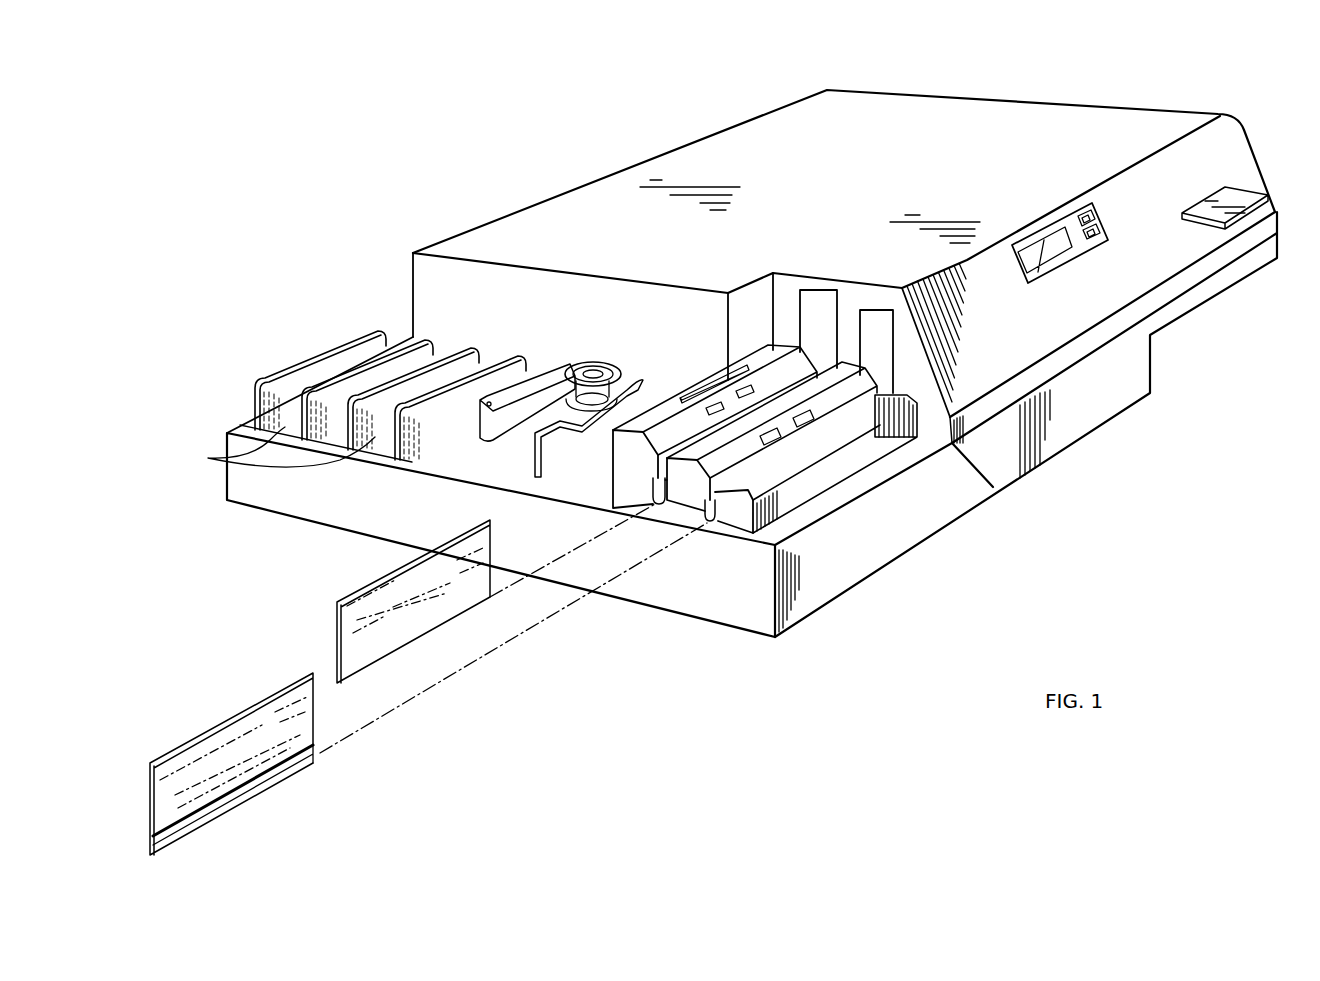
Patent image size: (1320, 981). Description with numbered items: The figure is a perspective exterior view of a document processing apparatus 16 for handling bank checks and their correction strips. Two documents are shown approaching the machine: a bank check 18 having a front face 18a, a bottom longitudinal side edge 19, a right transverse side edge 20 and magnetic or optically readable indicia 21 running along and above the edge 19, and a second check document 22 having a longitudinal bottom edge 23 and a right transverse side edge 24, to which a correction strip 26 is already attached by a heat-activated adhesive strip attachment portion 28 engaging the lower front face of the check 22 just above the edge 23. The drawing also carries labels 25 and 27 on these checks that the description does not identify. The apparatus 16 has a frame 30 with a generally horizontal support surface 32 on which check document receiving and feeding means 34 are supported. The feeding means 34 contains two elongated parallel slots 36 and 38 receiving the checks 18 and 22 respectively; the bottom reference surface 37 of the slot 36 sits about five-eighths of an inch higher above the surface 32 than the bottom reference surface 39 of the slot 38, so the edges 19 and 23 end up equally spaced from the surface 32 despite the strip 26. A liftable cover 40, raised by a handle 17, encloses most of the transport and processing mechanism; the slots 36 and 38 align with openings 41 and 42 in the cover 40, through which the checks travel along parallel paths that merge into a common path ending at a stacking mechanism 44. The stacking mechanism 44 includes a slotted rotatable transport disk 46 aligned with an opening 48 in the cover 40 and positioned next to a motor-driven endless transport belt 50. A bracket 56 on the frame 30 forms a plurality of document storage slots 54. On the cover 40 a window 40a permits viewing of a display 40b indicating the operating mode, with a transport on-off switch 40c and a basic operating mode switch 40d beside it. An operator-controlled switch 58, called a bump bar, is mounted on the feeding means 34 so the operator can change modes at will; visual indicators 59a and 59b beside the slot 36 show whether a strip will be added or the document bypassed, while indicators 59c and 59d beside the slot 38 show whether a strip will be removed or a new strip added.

The apparatus 16 is at (1134, 88).
The handle 17 is at (1248, 188).
The bank check 18 is at (380, 577).
The front face 18a is at (350, 620).
The bottom longitudinal side edge 19 is at (410, 638).
The right transverse side edge 20 is at (493, 543).
The magnetic or optically readable indicia 21 is at (392, 658).
The check document 22 is at (243, 712).
The longitudinal bottom edge 23 is at (148, 847).
The right transverse side edge 24 is at (318, 720).
The top edge of check 25 is at (462, 533).
The correction strip 26 is at (167, 848).
The top edge of second check 27 is at (288, 683).
The adhesive strip attachment portion 28 is at (258, 782).
The frame 30 is at (970, 507).
The support surface 32 is at (773, 538).
The check document receiving and feeding means 34 is at (688, 381).
The slot 36 is at (667, 486).
The bottom alignment or reference surface 37 is at (658, 503).
The slot 38 is at (708, 520).
The bottom reference surface 39 is at (713, 518).
The liftable cover 40 is at (905, 90).
The window 40a is at (1068, 222).
The display 40b is at (1062, 248).
The transport on-off switch 40c is at (1090, 210).
The basic operating mode switch 40d is at (1100, 232).
The opening 41 is at (805, 302).
The opening 42 is at (862, 325).
The stacking mechanism 44 is at (563, 318).
The transport disk 46 is at (633, 350).
The opening 48 is at (600, 363).
The endless transport belt 50 is at (553, 373).
The document storage slots 54 is at (272, 449).
The bracket 56 is at (325, 353).
The operator controlled switch 58 is at (708, 396).
The visual indicator 59a is at (710, 400).
The visual indicator 59b is at (742, 388).
The visual indicator 59c is at (777, 440).
The visual indicator 59d is at (807, 422).